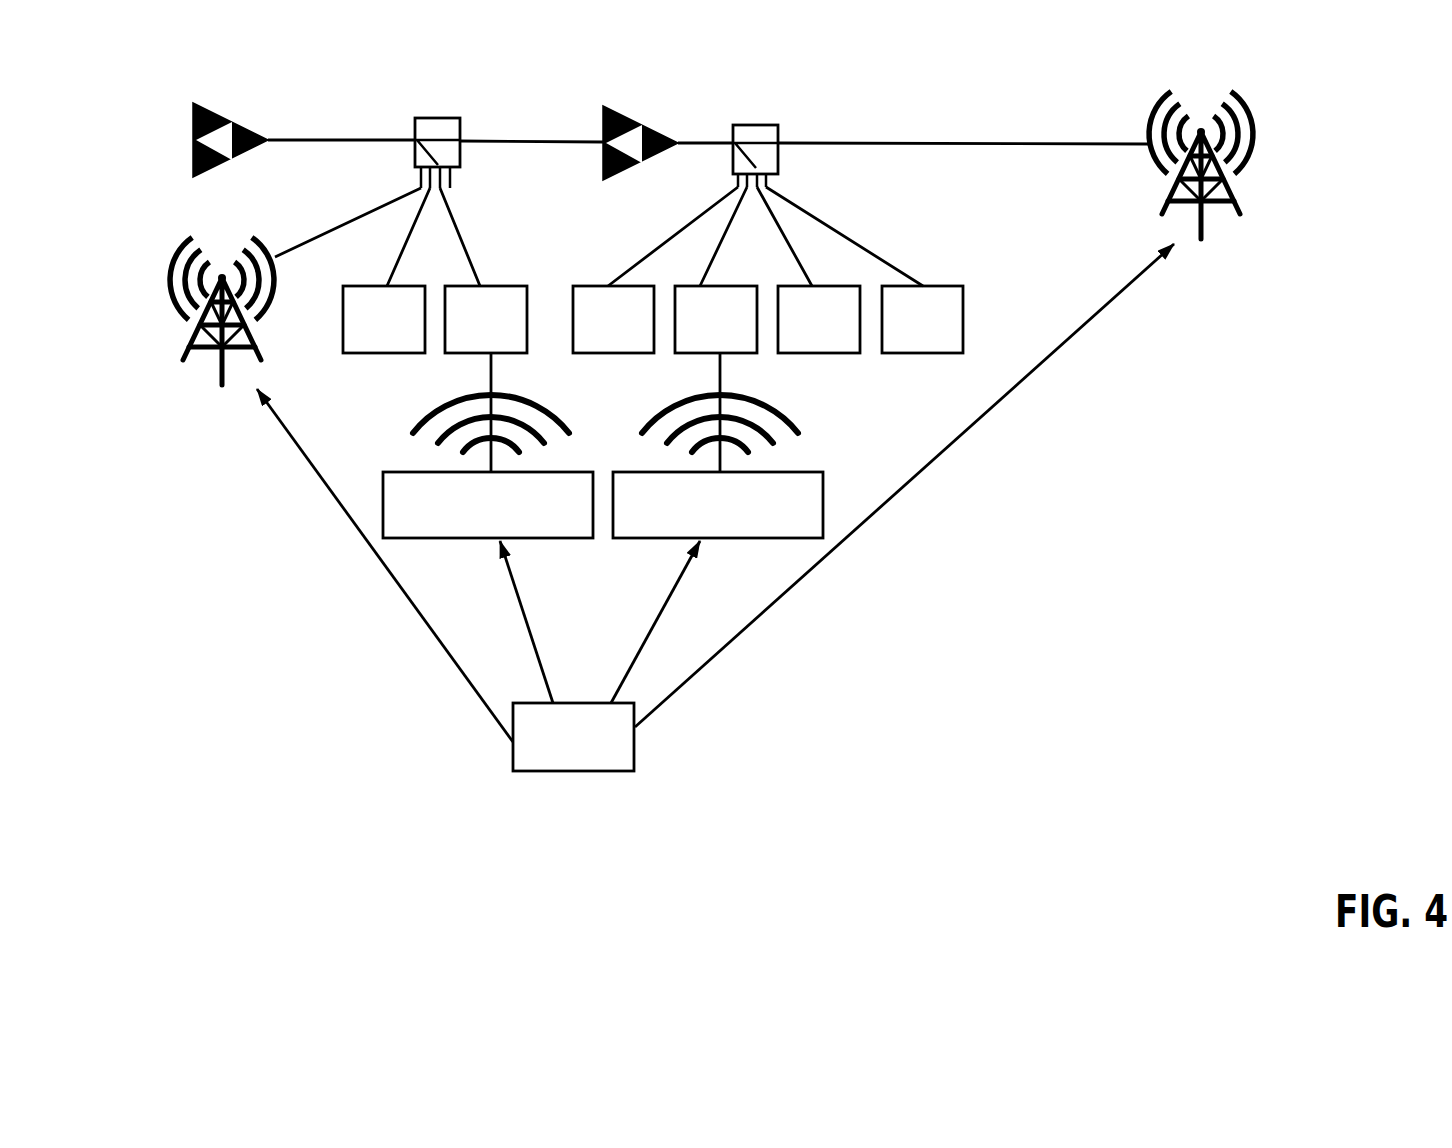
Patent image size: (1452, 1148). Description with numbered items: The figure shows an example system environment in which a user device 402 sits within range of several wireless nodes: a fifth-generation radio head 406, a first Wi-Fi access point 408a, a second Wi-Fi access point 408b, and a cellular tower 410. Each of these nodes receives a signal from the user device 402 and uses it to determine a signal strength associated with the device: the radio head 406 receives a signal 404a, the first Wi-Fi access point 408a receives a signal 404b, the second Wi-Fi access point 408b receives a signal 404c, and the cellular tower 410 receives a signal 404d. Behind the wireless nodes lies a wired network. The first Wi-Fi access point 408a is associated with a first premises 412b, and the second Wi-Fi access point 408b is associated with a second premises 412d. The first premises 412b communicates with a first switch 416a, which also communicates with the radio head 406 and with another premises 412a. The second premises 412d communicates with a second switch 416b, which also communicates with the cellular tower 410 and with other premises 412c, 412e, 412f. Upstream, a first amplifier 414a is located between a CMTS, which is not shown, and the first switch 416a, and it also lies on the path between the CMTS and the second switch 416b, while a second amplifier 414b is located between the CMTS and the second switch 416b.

The user device 402 is at (573, 737).
The signal 404a is at (387, 584).
The signal 404b is at (521, 590).
The signal 404c is at (664, 604).
The signal 404d is at (724, 657).
The 5G radio head 406 is at (184, 328).
The first Wi-Fi access point 408a is at (488, 445).
The second Wi-Fi access point 408b is at (718, 445).
The cellular tower 410 is at (1204, 250).
The premises 412a is at (384, 319).
The first premises 412b is at (486, 319).
The premises 412c is at (613, 319).
The second premises 412d is at (716, 319).
The premises 412e is at (819, 319).
The premises 412f is at (922, 319).
The first amplifier 414a is at (211, 102).
The second amplifier 414b is at (630, 106).
The first switch 416a is at (440, 115).
The second switch 416b is at (760, 122).